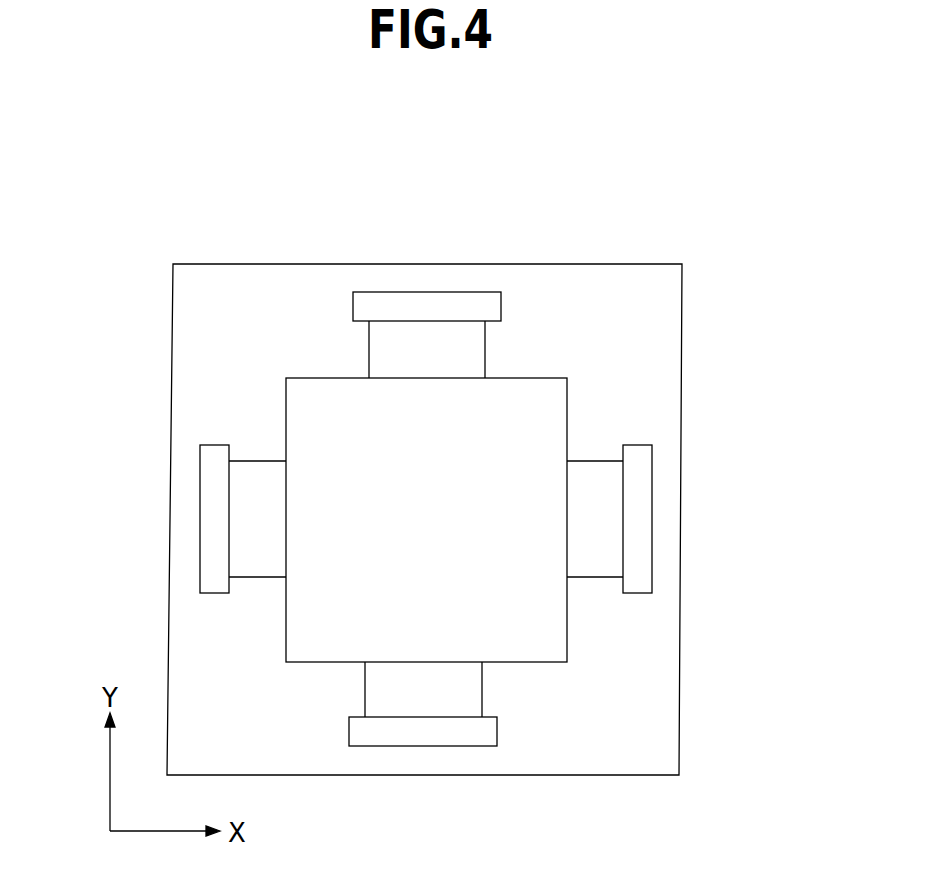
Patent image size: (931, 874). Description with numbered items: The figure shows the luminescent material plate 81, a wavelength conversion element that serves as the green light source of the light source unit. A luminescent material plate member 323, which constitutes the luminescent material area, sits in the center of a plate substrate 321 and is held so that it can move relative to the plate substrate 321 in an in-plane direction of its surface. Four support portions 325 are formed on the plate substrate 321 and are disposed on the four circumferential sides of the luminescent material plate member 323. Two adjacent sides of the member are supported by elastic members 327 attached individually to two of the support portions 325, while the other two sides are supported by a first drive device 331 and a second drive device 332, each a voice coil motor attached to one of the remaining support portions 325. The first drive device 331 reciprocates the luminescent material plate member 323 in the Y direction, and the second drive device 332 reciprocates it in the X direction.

The luminescent material plate 81 is at (692, 222).
The plate substrate 321 is at (663, 412).
The luminescent material plate member 323 is at (537, 400).
The support portion 325 is at (426, 307).
The elastic member 327 is at (591, 560).
The first drive device 331 is at (468, 352).
The second drive device 332 is at (260, 477).